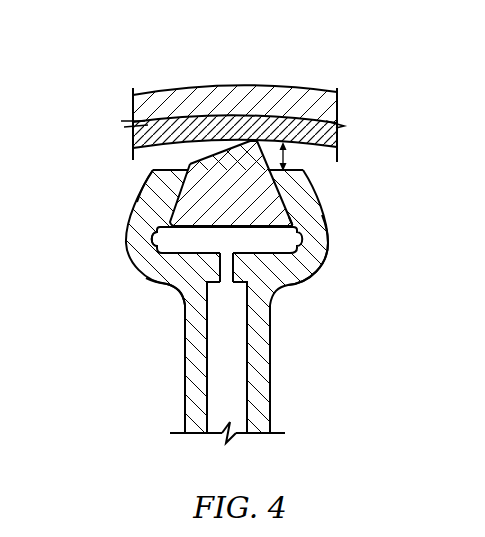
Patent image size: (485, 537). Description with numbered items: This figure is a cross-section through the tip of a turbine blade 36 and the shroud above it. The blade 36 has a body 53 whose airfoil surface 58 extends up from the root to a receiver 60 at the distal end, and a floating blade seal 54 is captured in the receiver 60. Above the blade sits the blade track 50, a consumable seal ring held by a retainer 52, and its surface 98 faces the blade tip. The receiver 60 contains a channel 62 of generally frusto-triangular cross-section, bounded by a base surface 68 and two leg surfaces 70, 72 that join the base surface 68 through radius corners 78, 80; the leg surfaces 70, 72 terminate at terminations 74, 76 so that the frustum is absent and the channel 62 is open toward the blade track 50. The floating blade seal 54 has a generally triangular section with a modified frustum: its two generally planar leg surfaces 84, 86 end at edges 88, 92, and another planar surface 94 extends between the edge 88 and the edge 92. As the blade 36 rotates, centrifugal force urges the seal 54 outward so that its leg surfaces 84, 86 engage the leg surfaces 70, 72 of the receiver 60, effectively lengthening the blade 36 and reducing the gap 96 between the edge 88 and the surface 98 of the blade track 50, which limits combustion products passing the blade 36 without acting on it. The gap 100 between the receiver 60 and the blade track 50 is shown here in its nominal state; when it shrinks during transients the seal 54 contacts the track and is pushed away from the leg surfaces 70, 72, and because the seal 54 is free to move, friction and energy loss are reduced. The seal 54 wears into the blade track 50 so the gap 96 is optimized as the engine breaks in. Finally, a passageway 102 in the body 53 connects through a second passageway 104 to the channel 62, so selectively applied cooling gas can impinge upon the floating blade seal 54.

The blade 36 is at (300, 417).
The blade track 50 is at (342, 147).
The retainer 52 is at (312, 105).
The body 53 is at (285, 393).
The floating blade seal 54 is at (250, 206).
The airfoil surface 58 is at (185, 400).
The receiver 60 is at (329, 280).
The channel 62 is at (157, 283).
The base surface 68 is at (170, 247).
The leg surface 70 is at (327, 243).
The leg surface 72 is at (153, 234).
The termination 74 is at (268, 175).
The termination 76 is at (153, 171).
The radius corner 78 is at (305, 277).
The radius corner 80 is at (152, 250).
The leg surface 84 is at (288, 226).
The leg surface 86 is at (146, 205).
The edge 88 is at (182, 86).
The edge 92 is at (190, 164).
The planar surface 94 is at (250, 139).
The gap 96 is at (258, 141).
The surface 98 is at (133, 157).
The gap 100 is at (287, 151).
The passageway 102 is at (225, 375).
The second passageway 104 is at (258, 280).